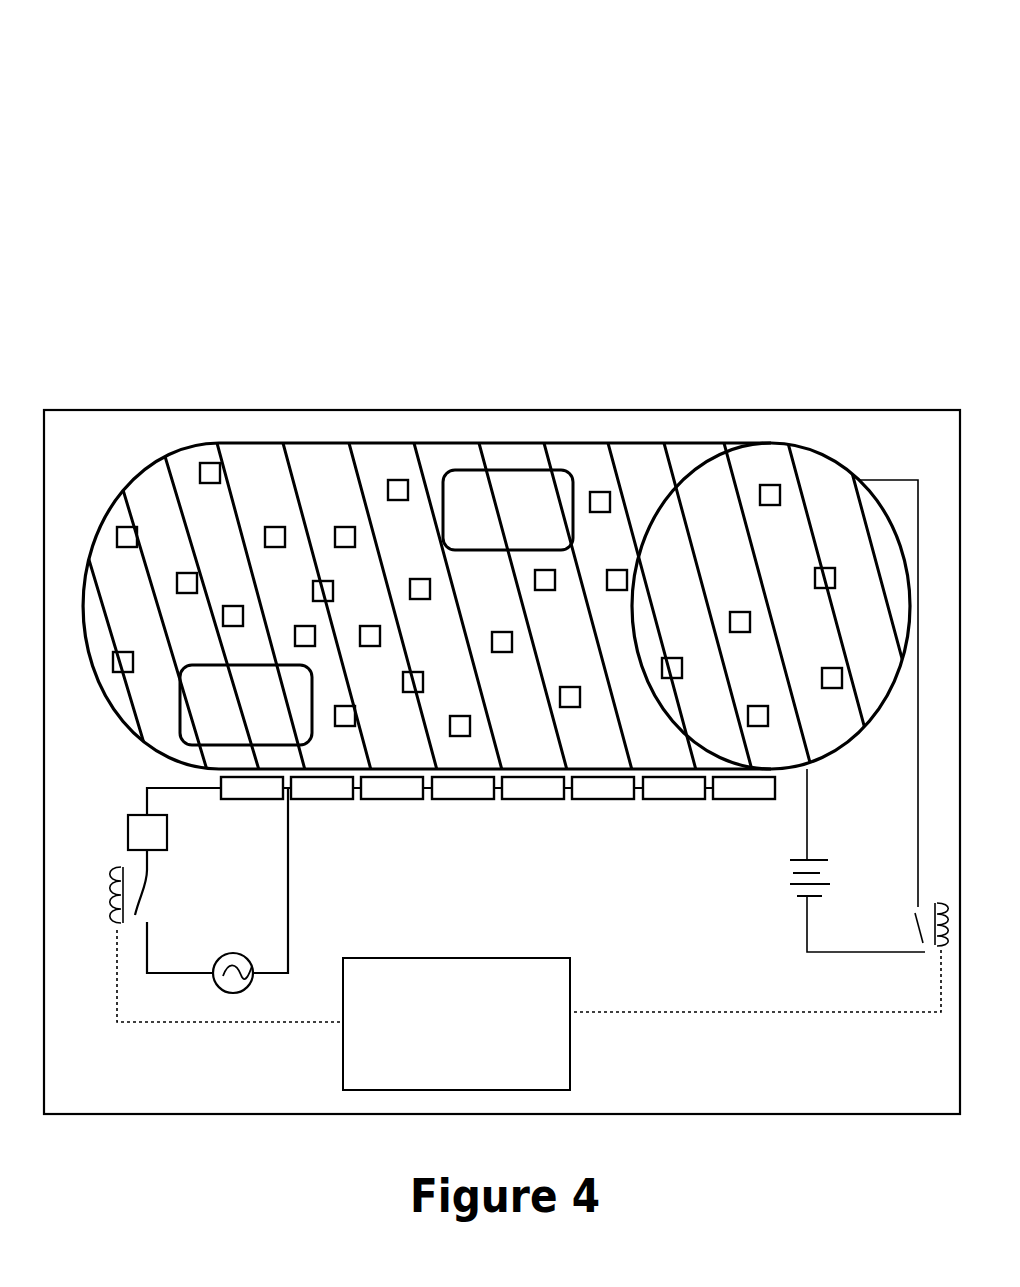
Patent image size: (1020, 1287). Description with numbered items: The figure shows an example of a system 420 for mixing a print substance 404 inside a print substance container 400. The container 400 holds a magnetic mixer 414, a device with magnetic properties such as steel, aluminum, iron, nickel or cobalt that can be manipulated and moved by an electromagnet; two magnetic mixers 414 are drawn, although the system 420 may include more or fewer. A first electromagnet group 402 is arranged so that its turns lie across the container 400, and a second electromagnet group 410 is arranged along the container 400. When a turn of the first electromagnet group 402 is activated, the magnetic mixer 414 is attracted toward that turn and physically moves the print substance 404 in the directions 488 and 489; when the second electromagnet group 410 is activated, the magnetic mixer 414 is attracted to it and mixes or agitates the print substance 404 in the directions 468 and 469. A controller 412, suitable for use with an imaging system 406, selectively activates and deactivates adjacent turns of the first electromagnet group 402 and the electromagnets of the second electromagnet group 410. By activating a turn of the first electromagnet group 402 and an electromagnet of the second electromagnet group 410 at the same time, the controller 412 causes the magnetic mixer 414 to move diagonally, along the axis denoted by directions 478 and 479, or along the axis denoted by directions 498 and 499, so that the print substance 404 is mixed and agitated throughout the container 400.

The system 420 is at (287, 207).
The print substance container 400 is at (302, 443).
The first electromagnet group 402 is at (670, 460).
The print substance 404 is at (210, 463).
The imaging system 406 is at (800, 410).
The second electromagnet group 410 is at (614, 800).
The controller 412 is at (570, 1055).
The magnetic mixer 414 is at (460, 470).
The direction 468 is at (802, 117).
The direction 469 is at (802, 117).
The axis direction 478 is at (802, 117).
The axis direction 479 is at (802, 117).
The direction 488 is at (802, 117).
The direction 489 is at (802, 117).
The axis direction 498 is at (802, 117).
The axis direction 499 is at (802, 117).